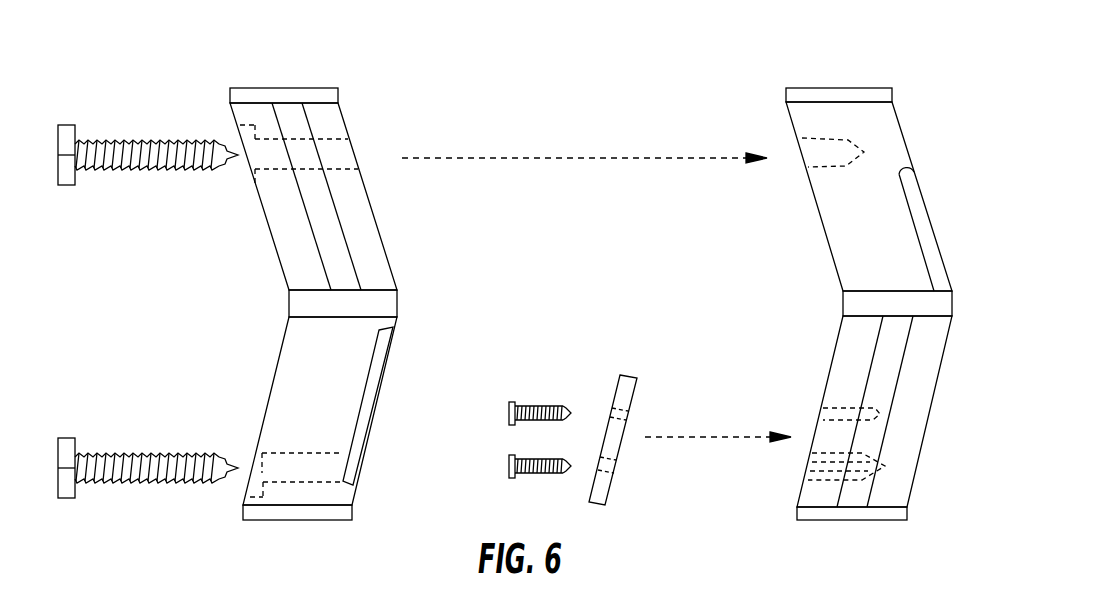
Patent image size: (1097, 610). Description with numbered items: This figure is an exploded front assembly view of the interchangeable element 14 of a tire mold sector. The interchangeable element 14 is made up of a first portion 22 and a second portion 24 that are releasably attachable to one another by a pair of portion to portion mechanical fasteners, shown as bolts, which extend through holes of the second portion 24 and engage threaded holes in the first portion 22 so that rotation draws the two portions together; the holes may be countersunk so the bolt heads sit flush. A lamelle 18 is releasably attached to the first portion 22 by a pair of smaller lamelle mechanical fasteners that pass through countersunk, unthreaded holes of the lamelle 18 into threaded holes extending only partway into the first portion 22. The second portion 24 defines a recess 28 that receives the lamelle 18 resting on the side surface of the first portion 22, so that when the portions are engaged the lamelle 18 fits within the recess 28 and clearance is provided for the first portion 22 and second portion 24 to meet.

The interchangeable element 14 is at (878, 96).
The lamelle 18 is at (630, 375).
The first portion 22 is at (905, 129).
The second portion 24 is at (350, 129).
The recess 28 is at (372, 401).